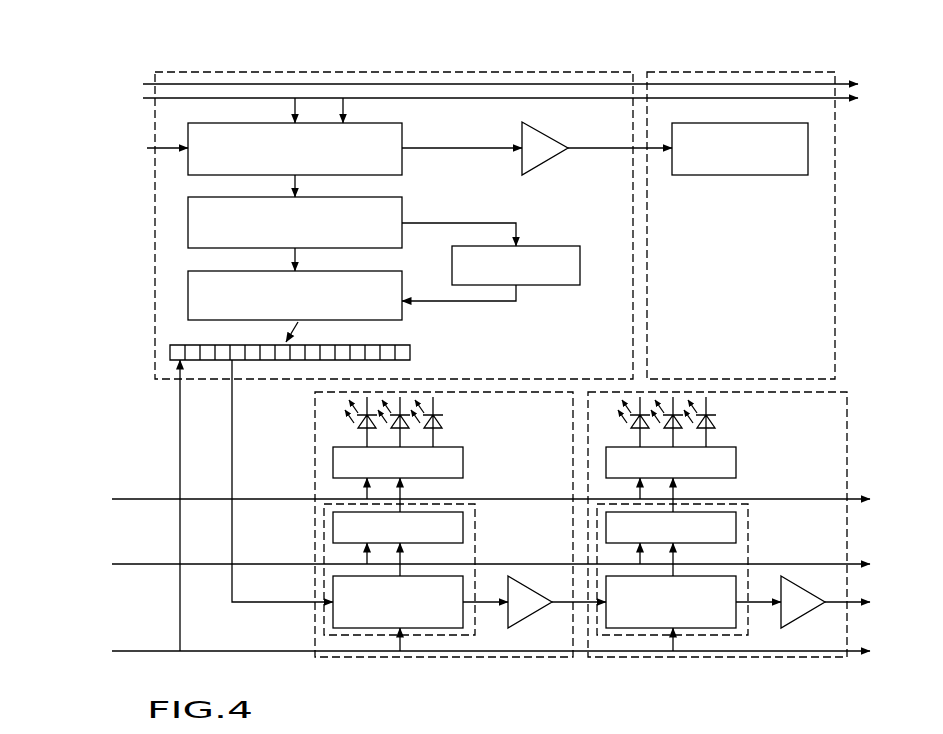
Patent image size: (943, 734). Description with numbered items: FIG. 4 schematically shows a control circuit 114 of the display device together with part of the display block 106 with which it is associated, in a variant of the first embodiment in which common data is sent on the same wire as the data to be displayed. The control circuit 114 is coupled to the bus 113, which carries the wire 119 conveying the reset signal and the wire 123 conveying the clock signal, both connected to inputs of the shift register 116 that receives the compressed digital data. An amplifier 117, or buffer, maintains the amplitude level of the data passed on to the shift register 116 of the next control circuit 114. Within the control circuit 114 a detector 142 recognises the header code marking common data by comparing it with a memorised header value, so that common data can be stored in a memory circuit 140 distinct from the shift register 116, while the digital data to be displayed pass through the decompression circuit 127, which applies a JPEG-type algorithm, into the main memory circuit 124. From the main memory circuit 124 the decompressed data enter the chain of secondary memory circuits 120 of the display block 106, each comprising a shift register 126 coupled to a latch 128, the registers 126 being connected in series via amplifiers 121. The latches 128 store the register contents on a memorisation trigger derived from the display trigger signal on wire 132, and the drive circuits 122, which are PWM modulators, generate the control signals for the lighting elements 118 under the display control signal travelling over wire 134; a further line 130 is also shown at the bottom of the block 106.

The display block 106 is at (855, 408).
The bus 113 is at (429, 90).
The control circuit 114 is at (262, 72).
The shift register 116 is at (387, 130).
The amplifier 117 is at (545, 143).
The lighting elements 118 is at (440, 428).
The wire 119 is at (147, 84).
The secondary memory circuit 120 is at (422, 637).
The amplifier 121 is at (522, 603).
The drive circuit 122 is at (452, 465).
The wire 123 is at (458, 114).
The main memory circuit 124 is at (170, 350).
The shift register 126 is at (363, 615).
The decompression circuit 127 is at (198, 287).
The latch 128 is at (452, 530).
The data bus line 130 is at (150, 651).
The wire 132 is at (150, 564).
The wire 134 is at (150, 499).
The memory circuit 140 is at (556, 257).
The detector 142 is at (200, 216).